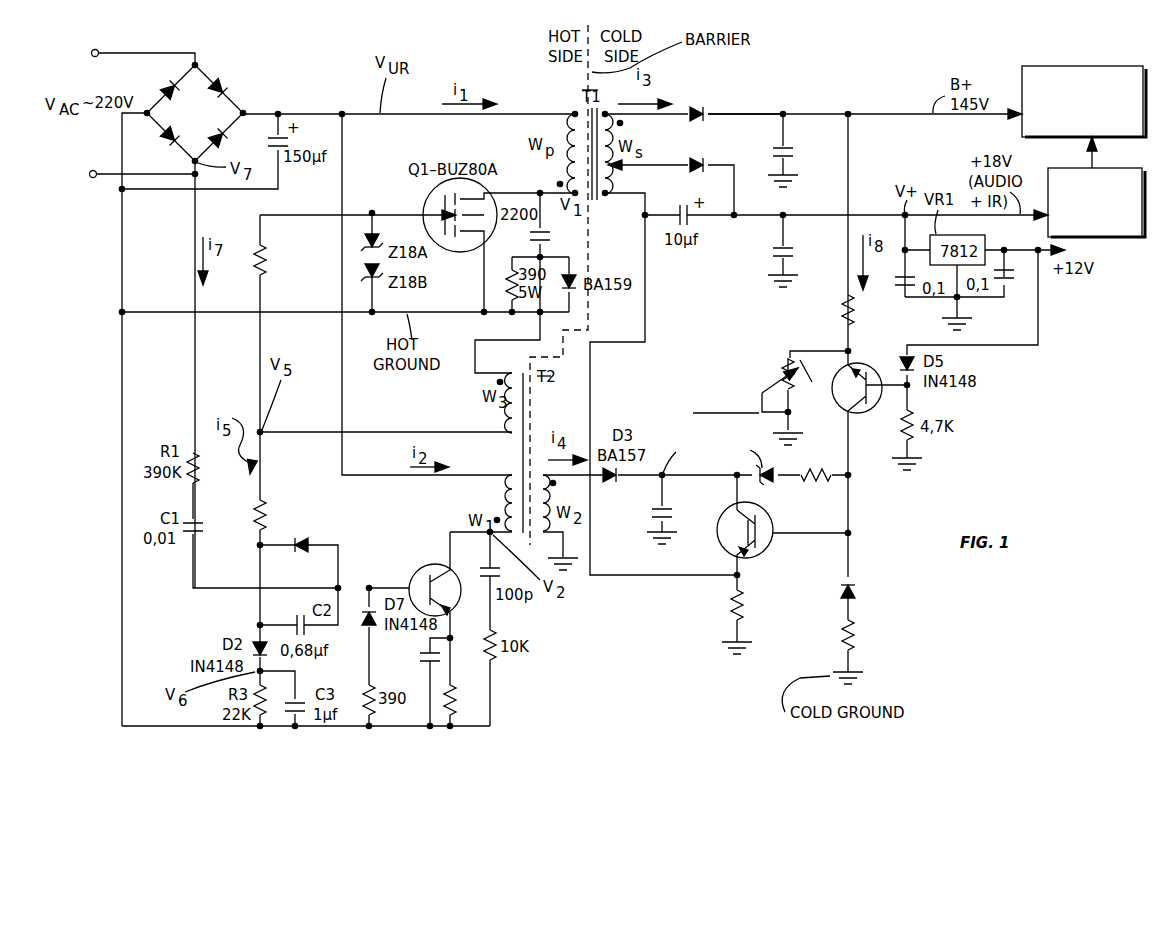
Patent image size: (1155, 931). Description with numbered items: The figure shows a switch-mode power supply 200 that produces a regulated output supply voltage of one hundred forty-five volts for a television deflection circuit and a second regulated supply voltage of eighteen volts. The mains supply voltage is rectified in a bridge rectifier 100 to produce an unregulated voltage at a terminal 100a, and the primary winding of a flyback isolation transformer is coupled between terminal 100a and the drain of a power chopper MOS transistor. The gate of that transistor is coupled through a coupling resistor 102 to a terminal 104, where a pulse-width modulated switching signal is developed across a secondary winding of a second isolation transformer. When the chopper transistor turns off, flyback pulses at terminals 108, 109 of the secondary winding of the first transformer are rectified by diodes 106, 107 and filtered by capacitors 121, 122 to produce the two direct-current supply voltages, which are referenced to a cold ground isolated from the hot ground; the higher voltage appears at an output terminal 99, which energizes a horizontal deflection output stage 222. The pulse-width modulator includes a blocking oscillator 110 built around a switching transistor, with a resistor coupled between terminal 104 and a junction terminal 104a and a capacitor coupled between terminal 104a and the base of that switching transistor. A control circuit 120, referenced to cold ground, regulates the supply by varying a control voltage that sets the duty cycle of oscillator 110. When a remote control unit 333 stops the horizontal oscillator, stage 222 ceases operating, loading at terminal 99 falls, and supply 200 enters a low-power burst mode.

The terminal 99 is at (848, 113).
The bridge rectifier 100 is at (212, 121).
The terminal 100a is at (574, 112).
The coupling resistor 102 is at (267, 252).
The terminal 104 is at (266, 428).
The terminal 104a is at (258, 545).
The diode 106 is at (712, 118).
The diode 107 is at (703, 172).
The terminal 108 is at (676, 110).
The terminal 109 is at (646, 162).
The blocking oscillator 110 is at (431, 528).
The control circuit 120 is at (906, 523).
The capacitor 121 is at (778, 150).
The capacitor 122 is at (789, 252).
The switch-mode power supply 200 is at (634, 683).
The horizontal deflection output stage 222 is at (1050, 66).
The remote control unit 333 is at (1115, 238).